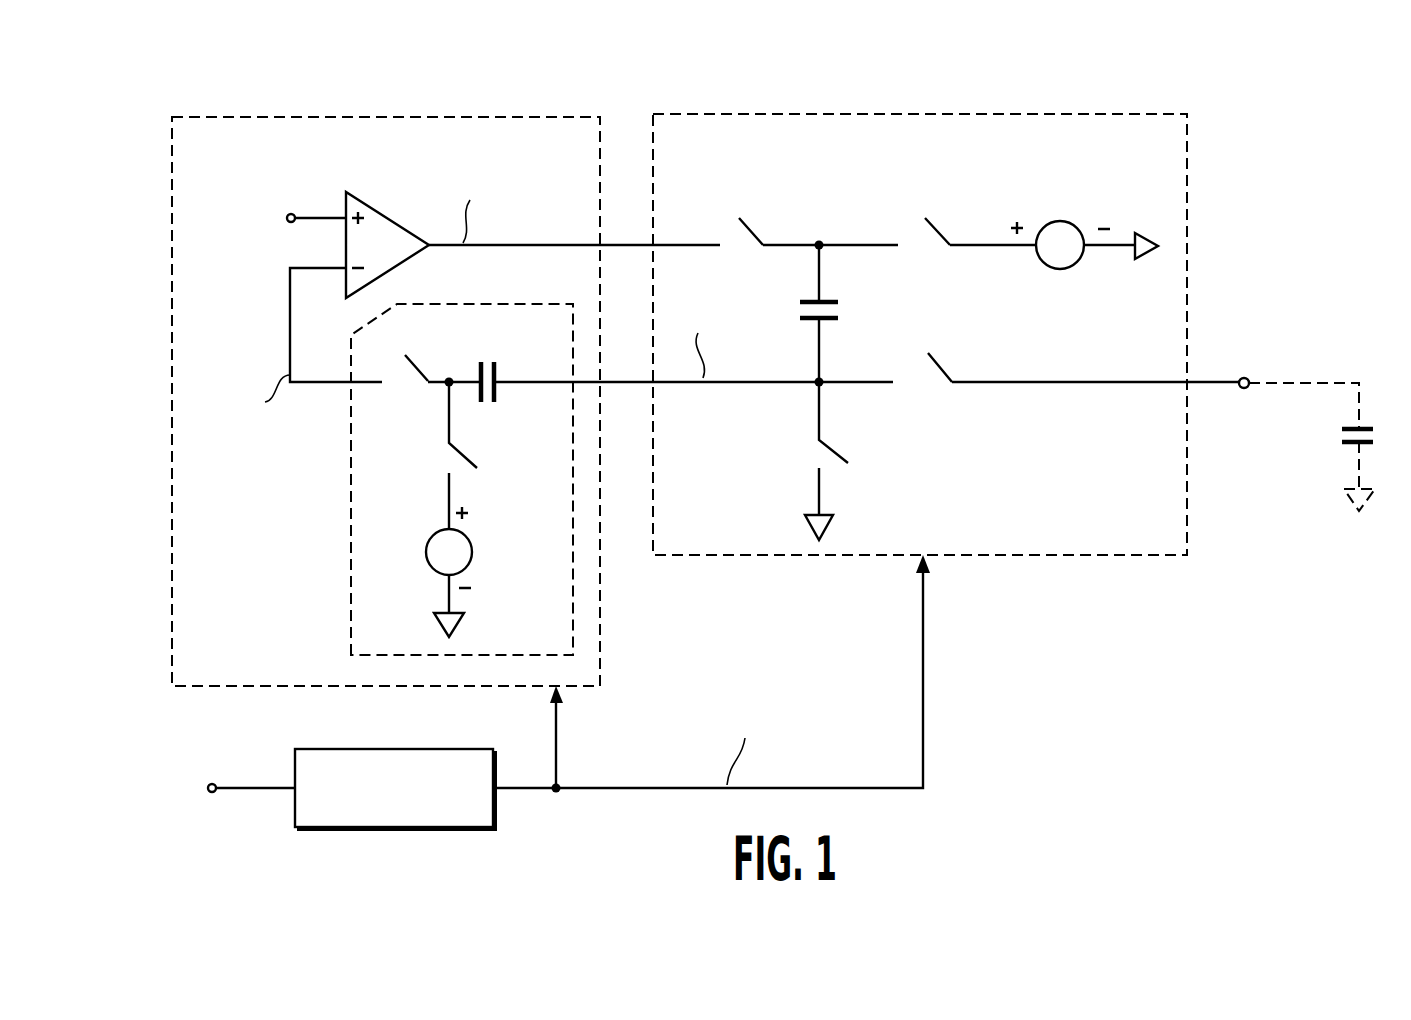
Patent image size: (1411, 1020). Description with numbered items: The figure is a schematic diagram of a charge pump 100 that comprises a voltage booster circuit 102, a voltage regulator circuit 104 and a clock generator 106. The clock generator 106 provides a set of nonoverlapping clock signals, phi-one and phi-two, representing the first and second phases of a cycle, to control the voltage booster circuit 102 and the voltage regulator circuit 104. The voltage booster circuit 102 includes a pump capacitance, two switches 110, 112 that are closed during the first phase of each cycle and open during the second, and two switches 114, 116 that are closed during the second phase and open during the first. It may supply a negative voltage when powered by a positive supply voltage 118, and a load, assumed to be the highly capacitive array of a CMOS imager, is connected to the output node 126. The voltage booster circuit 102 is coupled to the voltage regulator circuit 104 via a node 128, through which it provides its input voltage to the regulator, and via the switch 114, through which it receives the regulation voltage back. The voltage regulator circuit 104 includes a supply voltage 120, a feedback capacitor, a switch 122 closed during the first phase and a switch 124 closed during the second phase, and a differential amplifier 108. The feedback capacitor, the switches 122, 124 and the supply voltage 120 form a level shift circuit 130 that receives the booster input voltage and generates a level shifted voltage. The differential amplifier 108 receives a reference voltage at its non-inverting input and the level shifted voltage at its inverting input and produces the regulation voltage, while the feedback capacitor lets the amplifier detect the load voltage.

The charge pump 100 is at (645, 82).
The voltage booster circuit 102 is at (1187, 152).
The voltage regulator circuit 104 is at (170, 197).
The clock generator 106 is at (295, 768).
The differential amplifier 108 is at (378, 205).
The switch 110 is at (935, 237).
The switch 112 is at (852, 465).
The switch 114 is at (748, 238).
The switch 116 is at (935, 398).
The positive supply voltage 118 is at (1040, 262).
The supply voltage 120 is at (472, 550).
The switch 122 is at (470, 452).
The switch 124 is at (425, 375).
The output node 126 is at (1247, 390).
The node 128 is at (815, 378).
The level shift circuit 130 is at (351, 467).